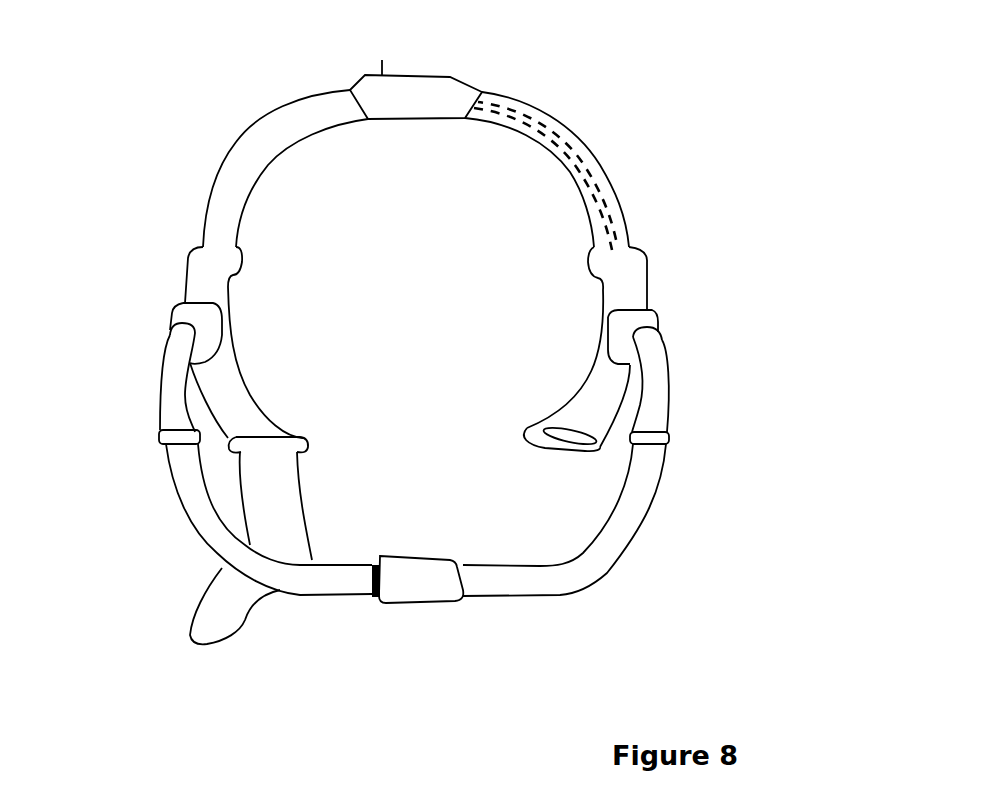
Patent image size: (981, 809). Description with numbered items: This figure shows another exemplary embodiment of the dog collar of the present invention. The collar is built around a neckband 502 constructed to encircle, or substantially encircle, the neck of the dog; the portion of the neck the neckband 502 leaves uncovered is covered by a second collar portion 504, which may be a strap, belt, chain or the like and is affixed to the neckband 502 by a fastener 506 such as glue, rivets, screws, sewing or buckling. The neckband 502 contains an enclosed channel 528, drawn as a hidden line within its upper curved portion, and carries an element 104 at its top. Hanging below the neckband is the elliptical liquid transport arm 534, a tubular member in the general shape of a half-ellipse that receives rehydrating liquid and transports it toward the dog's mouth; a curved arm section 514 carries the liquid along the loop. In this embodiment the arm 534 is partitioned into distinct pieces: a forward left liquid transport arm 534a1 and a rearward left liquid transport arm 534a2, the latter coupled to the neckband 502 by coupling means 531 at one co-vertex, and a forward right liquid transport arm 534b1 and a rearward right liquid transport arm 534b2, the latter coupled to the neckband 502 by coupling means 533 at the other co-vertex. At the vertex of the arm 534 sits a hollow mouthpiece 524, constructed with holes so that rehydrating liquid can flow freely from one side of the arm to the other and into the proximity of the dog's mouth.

The top strap pad 104 is at (447, 69).
The neckband 502 is at (612, 166).
The second collar portion 504 is at (189, 651).
The fastener 506 is at (317, 446).
The curved arm section 514 is at (293, 92).
The mouthpiece 524 is at (414, 556).
The enclosed channel 528 is at (545, 126).
The coupling means 531 is at (185, 309).
The coupling means 533 is at (655, 304).
The elliptical liquid transport arm 534 is at (825, 305).
The forward left liquid transport arm 534a1 is at (186, 519).
The rearward left liquid transport arm 534a2 is at (157, 390).
The forward right liquid transport arm 534b1 is at (596, 527).
The rearward right liquid transport arm 534b2 is at (669, 399).